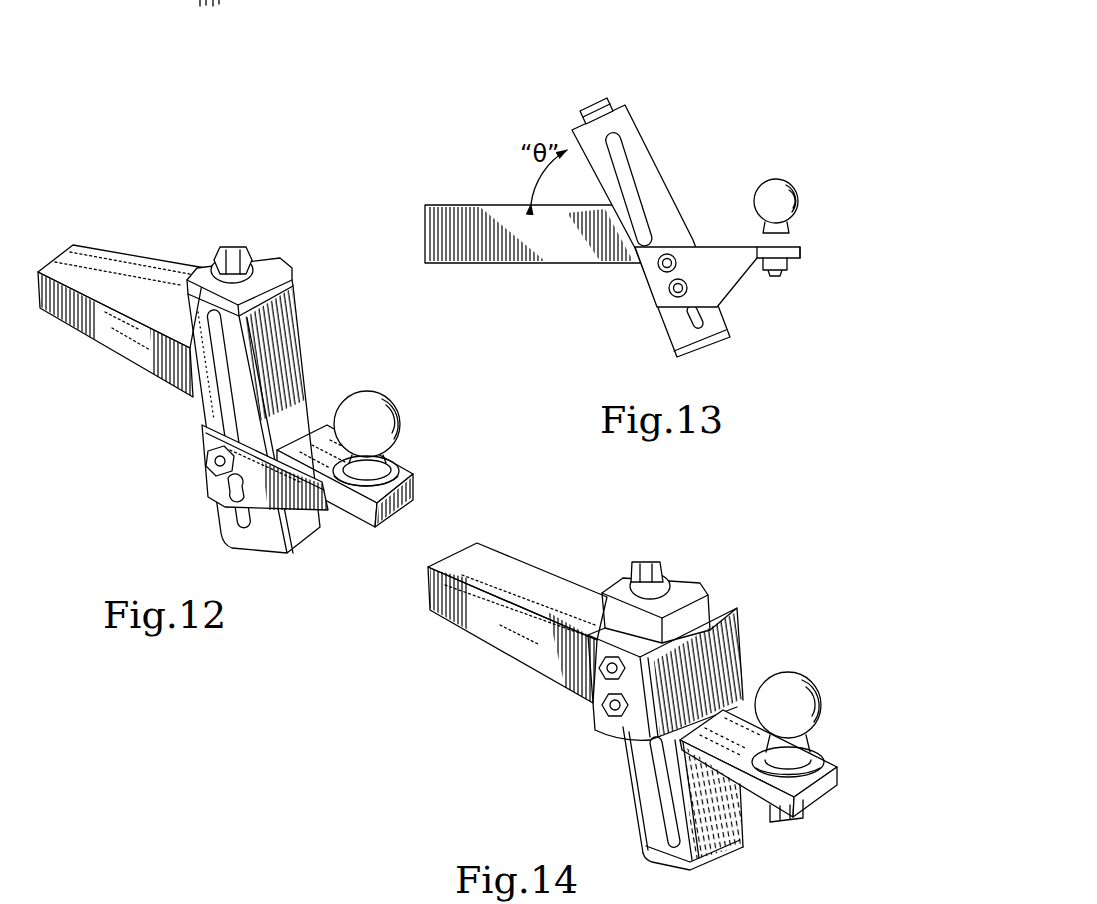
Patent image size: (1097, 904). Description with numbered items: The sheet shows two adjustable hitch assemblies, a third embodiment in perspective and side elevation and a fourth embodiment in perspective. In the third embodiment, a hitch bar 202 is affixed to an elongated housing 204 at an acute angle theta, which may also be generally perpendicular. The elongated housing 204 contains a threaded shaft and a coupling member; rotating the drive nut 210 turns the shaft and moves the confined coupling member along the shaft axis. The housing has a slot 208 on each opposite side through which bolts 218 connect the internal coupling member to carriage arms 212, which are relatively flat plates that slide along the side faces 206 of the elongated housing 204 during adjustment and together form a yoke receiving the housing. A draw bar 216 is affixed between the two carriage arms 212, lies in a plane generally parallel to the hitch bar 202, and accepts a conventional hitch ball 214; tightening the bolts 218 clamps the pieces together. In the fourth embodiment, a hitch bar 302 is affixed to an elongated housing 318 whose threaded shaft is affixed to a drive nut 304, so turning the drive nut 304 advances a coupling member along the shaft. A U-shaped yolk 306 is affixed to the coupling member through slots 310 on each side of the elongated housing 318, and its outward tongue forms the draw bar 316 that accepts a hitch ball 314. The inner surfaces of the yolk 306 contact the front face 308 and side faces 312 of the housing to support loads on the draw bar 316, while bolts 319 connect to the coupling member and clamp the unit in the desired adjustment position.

In FIG. 12, the hitch bar 202 is at (116, 348).
In FIG. 13, the hitch bar 202 is at (492, 213).
In FIG. 12, the elongated housing 204 is at (316, 307).
In FIG. 12, the side faces 206 is at (304, 357).
In FIG. 13, the side faces 206 is at (643, 170).
In FIG. 12, the slot 208 is at (196, 386).
In FIG. 13, the slot 208 is at (622, 150).
In FIG. 12, the drive nut 210 is at (240, 252).
In FIG. 13, the drive nut 210 is at (600, 98).
In FIG. 12, the carriage arm 212 is at (250, 492).
In FIG. 13, the carriage arm 212 is at (710, 248).
In FIG. 12, the hitch ball 214 is at (381, 421).
In FIG. 13, the hitch ball 214 is at (785, 200).
In FIG. 12, the draw bar 216 is at (337, 508).
In FIG. 12, the bolts 218 is at (201, 462).
In FIG. 14, the hitch bar 302 is at (430, 614).
In FIG. 14, the drive nut 304 is at (649, 566).
In FIG. 14, the yolk 306 is at (746, 639).
In FIG. 14, the front face 308 is at (720, 840).
In FIG. 14, the slots 310 is at (650, 830).
In FIG. 14, the side faces 312 is at (635, 790).
In FIG. 14, the hitch ball 314 is at (788, 698).
In FIG. 14, the draw bar 316 is at (834, 771).
In FIG. 14, the elongated housing 318 is at (610, 766).
In FIG. 14, the bolts 319 is at (602, 706).